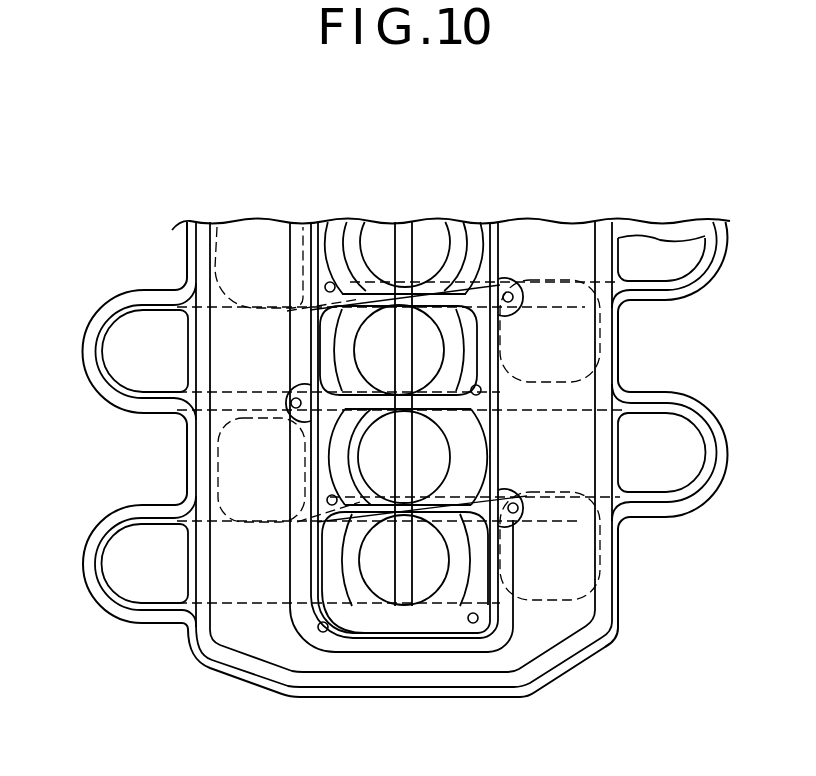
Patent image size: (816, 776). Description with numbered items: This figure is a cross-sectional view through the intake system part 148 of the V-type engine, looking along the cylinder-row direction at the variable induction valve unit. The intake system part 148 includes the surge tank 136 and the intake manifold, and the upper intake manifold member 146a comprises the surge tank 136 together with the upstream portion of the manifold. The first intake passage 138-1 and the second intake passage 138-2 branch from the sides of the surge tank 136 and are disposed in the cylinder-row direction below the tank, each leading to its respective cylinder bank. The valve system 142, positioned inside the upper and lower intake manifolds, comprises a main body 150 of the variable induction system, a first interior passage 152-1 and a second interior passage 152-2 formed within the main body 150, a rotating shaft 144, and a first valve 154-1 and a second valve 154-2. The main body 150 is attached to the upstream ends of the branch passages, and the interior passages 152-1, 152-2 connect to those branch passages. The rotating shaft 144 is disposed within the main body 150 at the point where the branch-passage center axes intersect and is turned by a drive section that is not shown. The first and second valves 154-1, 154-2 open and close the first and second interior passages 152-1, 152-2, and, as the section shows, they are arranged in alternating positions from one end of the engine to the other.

The intake system part 148 is at (665, 177).
The surge tank 136 is at (222, 440).
The first intake passage 138-1 is at (133, 563).
The second intake passage 138-2 is at (657, 463).
The valve system 142 is at (377, 642).
The rotating shaft 144 is at (403, 595).
The upper intake manifold member 146a is at (208, 667).
The main body 150 is at (458, 627).
The first interior passage 152-1 is at (338, 561).
The second interior passage 152-2 is at (470, 470).
The first valve 154-1 is at (382, 578).
The second valve 154-2 is at (433, 455).